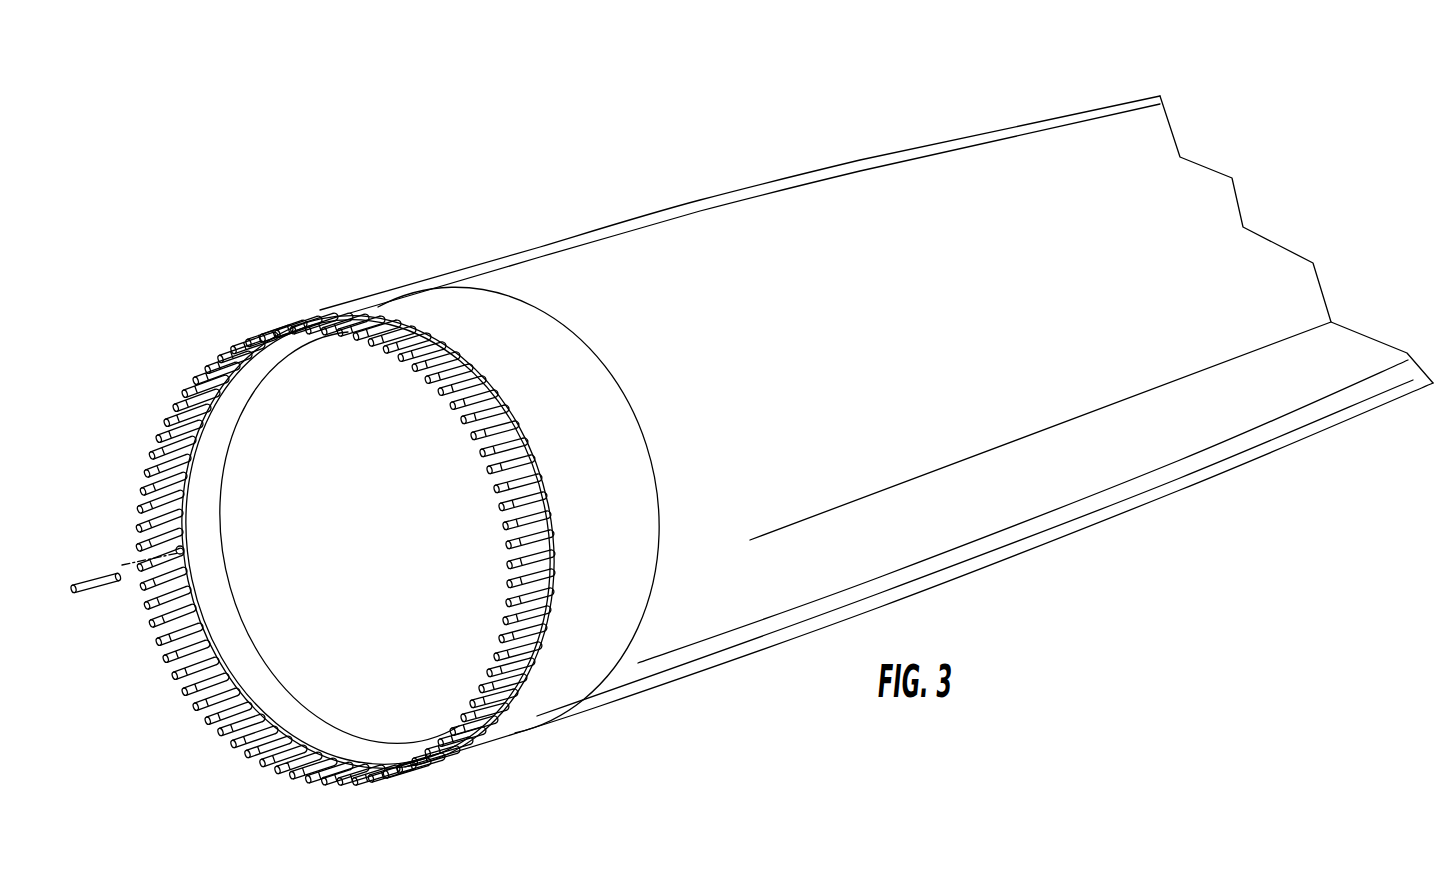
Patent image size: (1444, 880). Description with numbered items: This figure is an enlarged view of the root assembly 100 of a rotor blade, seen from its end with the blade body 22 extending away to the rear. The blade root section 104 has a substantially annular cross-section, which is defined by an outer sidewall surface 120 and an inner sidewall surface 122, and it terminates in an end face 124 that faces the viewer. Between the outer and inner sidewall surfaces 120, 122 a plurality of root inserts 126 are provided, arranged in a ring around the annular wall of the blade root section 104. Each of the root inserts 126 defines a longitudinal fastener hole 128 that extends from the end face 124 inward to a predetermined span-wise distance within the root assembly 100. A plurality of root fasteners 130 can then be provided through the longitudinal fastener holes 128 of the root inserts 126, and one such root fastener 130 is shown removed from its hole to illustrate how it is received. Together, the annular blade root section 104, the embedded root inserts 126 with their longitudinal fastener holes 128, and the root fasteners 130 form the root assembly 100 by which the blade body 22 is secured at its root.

The airfoil body 22 is at (910, 84).
The root assembly 100 is at (326, 284).
The blade root section 104 is at (447, 316).
The outer sidewall surface 120 is at (572, 672).
The inner sidewall surface 122 is at (320, 724).
The end face 124 is at (423, 770).
The root inserts 126 is at (556, 562).
The longitudinal fastener hole 128 is at (184, 546).
The root fasteners 130 is at (88, 573).